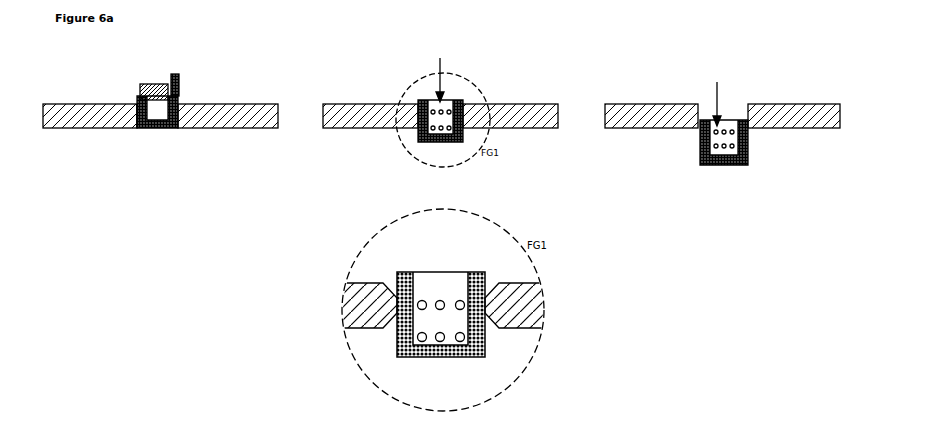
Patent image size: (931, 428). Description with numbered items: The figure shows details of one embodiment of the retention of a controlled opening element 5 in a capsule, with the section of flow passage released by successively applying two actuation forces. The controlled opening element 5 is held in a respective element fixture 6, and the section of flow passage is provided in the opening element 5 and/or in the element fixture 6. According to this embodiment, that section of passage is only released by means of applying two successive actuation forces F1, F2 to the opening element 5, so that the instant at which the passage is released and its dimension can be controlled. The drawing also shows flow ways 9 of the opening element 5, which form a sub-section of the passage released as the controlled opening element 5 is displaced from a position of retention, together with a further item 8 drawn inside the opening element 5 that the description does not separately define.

The controlled opening element 5 is at (178, 94).
The element fixture 6 is at (126, 111).
The granular filler 8 is at (285, 190).
The first level of flow ways 9 is at (423, 326).
The first actuation force F1 is at (445, 80).
The second actuation force F2 is at (723, 104).